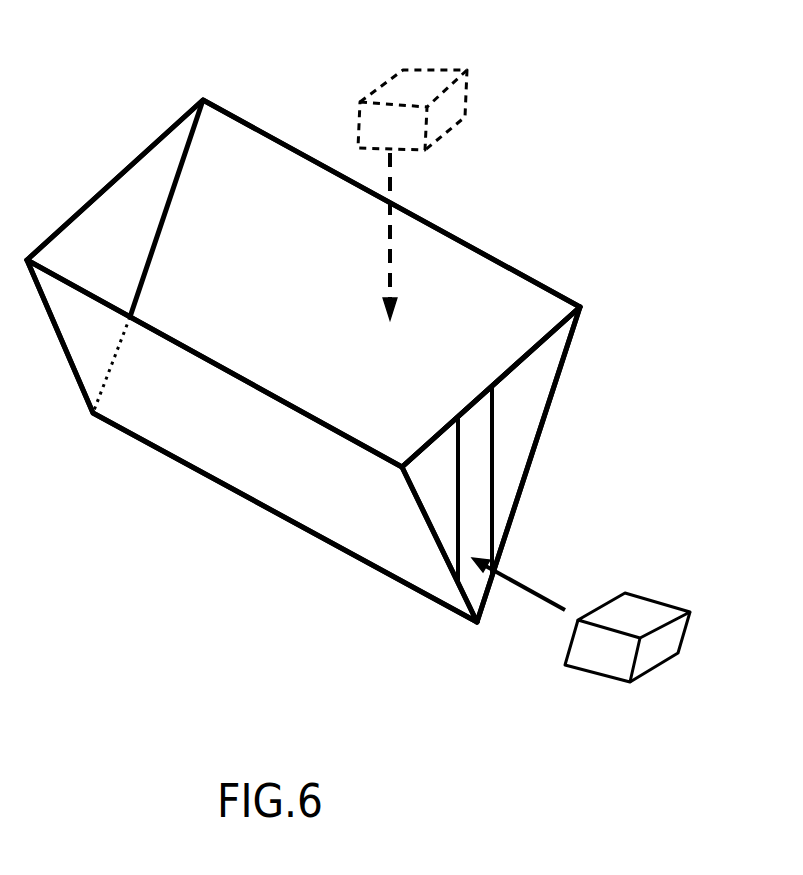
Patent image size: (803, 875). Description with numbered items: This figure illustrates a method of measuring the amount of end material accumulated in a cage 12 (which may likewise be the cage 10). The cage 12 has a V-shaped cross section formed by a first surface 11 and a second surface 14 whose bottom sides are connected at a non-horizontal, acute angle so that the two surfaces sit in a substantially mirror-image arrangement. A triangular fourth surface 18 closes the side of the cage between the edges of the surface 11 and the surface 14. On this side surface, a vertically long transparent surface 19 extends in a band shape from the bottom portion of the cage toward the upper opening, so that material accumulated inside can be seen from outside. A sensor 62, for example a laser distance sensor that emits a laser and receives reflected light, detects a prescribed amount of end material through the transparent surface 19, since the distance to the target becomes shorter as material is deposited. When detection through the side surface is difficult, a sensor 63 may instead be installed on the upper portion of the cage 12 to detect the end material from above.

The cage 10 is at (303, 322).
The cage 12 is at (146, 103).
The first surface 11 is at (317, 160).
The second surface 14 is at (160, 440).
The fourth surface 18 is at (523, 442).
The transparent surface 19 is at (480, 508).
The sensor 62 is at (662, 592).
The sensor 63 is at (428, 70).